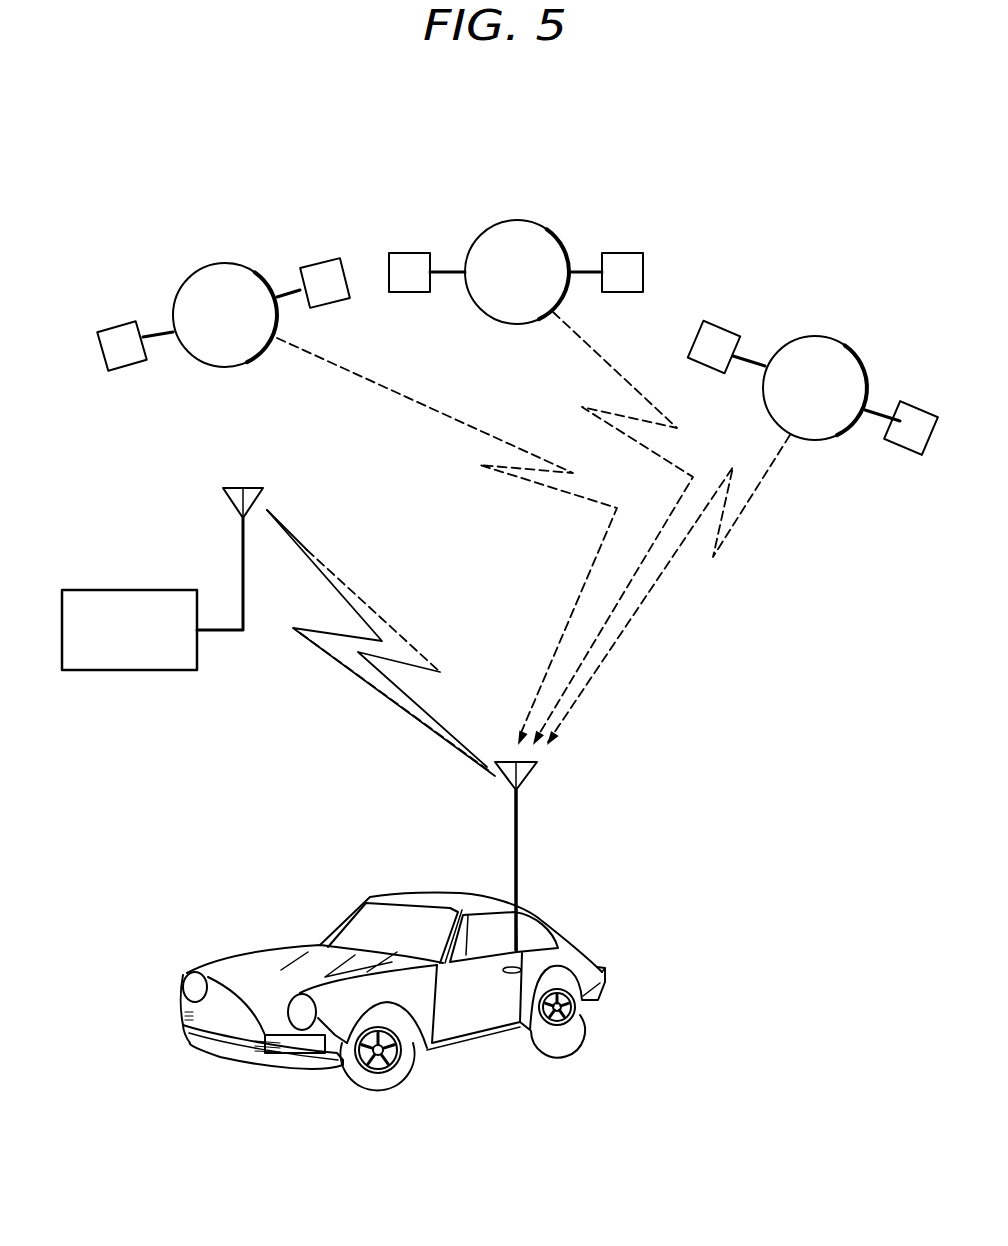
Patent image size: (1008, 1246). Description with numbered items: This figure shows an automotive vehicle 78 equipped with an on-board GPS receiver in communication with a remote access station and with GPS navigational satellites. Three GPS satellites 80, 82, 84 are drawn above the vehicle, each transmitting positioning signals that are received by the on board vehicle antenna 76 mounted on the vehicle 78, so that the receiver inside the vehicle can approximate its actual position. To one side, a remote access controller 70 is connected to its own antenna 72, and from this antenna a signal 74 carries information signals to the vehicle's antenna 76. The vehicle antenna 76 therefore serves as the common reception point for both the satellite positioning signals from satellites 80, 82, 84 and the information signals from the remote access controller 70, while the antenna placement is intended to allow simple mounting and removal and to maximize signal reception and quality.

The remote access controller 70 is at (125, 590).
The antenna 72 is at (253, 487).
The signal 74 is at (360, 595).
The on board vehicle antenna 76 is at (517, 797).
The vehicle 78 is at (245, 958).
The GPS satellite 80 is at (230, 263).
The GPS satellite 82 is at (515, 220).
The GPS satellite 84 is at (815, 337).